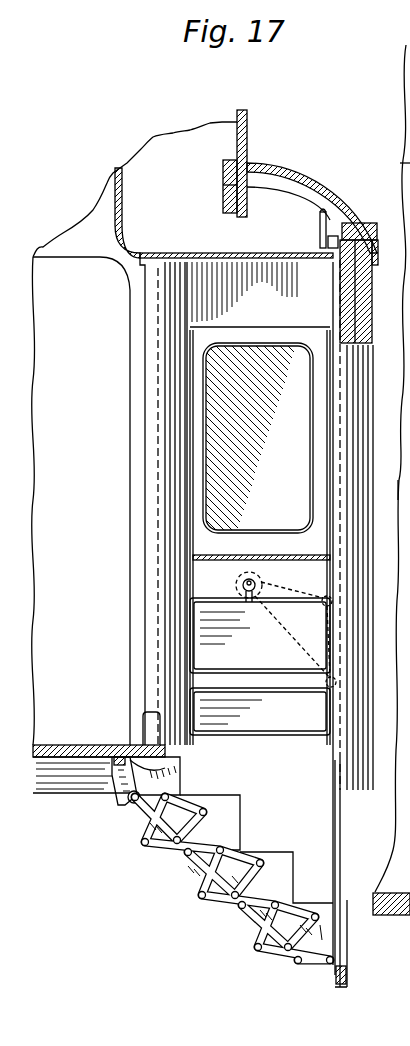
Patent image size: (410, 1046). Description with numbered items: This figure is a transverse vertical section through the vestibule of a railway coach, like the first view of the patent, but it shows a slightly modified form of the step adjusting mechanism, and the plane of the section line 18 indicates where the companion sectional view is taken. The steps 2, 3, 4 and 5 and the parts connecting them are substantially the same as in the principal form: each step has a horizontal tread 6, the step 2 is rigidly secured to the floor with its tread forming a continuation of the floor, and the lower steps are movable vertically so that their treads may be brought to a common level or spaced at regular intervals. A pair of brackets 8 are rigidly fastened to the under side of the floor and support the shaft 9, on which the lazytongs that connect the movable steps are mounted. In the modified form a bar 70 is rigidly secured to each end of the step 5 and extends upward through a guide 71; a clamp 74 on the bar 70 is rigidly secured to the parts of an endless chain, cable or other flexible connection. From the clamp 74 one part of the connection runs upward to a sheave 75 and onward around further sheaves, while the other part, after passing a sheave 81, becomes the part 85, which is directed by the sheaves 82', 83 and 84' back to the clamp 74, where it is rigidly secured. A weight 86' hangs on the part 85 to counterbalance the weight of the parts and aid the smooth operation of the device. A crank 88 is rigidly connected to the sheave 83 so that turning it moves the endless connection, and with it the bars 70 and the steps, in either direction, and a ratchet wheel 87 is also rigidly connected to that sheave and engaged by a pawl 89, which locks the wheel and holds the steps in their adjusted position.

The step 2 is at (180, 775).
The step 3 is at (240, 808).
The step 4 is at (295, 855).
The step 5 is at (342, 912).
The tread 6 is at (143, 740).
The bracket 8 is at (120, 775).
The shaft 9 is at (132, 803).
The section line 18 is at (364, 154).
The bar 70 is at (338, 876).
The guide 71 is at (409, 492).
The clamp 74 is at (345, 646).
The sheave 75 is at (338, 232).
The sheave 81 is at (322, 212).
The sheave 82' is at (260, 635).
The sheave 83 is at (295, 630).
The sheave 84' is at (260, 711).
The chain part 85 is at (327, 452).
The weight 86' is at (266, 438).
The ratchet wheel 87 is at (251, 572).
The crank 88 is at (249, 603).
The pawl 89 is at (237, 581).